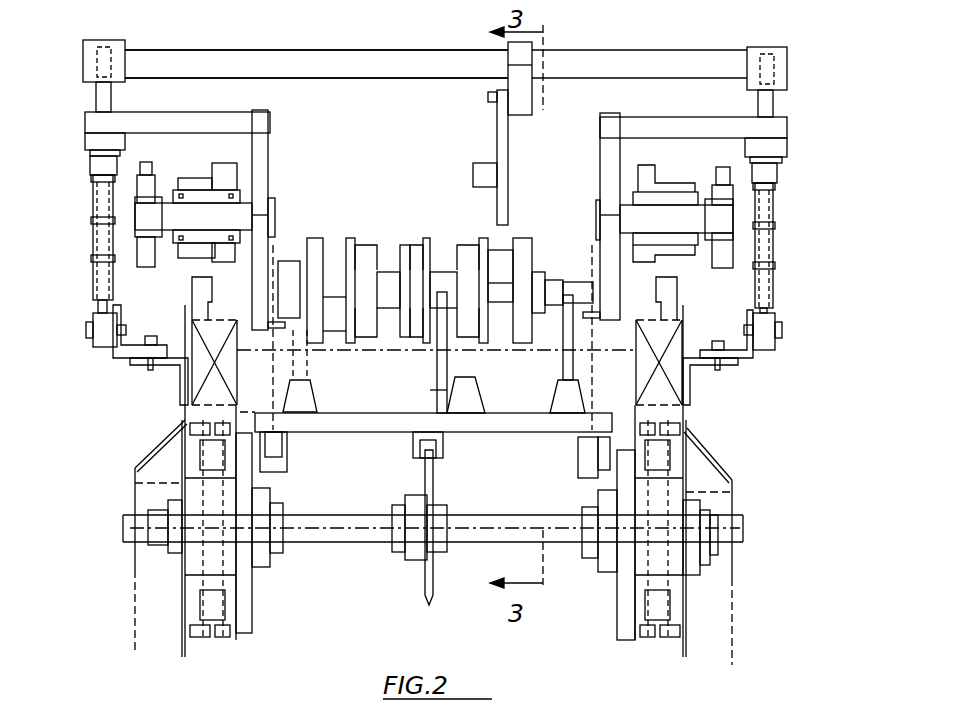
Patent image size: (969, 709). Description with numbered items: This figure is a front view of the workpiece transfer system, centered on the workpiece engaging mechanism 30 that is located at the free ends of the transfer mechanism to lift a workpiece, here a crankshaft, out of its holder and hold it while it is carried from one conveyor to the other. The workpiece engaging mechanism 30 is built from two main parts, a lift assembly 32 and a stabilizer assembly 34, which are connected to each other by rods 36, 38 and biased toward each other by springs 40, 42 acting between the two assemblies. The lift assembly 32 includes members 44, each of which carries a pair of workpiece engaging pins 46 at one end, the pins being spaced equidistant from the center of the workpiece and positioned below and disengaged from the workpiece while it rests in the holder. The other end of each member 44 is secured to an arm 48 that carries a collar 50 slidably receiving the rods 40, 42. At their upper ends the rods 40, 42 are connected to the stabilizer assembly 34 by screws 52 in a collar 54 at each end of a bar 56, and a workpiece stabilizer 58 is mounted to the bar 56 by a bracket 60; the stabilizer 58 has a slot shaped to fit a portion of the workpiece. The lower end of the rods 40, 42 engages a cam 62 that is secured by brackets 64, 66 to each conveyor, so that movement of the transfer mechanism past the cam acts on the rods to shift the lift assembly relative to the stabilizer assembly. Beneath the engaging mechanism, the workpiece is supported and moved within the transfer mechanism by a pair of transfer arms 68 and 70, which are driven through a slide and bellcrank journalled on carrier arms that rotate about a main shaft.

The workpiece engaging mechanism 30 is at (822, 80).
The lift assembly 32 is at (274, 168).
The stabilizer assembly 34 is at (352, 50).
The rod 36 is at (93, 275).
The rod 38 is at (775, 282).
The spring 40 is at (95, 192).
The spring 42 is at (778, 205).
The member 44 is at (264, 245).
The workpiece engaging pin 46 is at (277, 332).
The arm 48 is at (188, 125).
The collar 50 is at (88, 142).
The screw 52 is at (98, 50).
The collar 54 is at (113, 42).
The bar 56 is at (268, 57).
The workpiece stabilizer 58 is at (497, 128).
The bracket 60 is at (520, 115).
The cam 62 is at (100, 338).
The bracket 64 is at (117, 353).
The bracket 66 is at (170, 362).
The transfer arm 68 is at (218, 163).
The transfer arm 70 is at (660, 172).